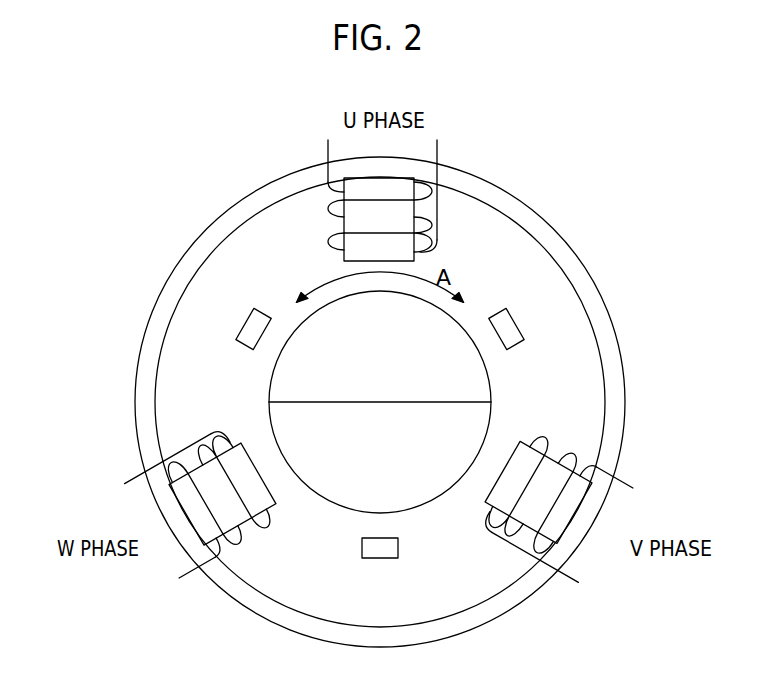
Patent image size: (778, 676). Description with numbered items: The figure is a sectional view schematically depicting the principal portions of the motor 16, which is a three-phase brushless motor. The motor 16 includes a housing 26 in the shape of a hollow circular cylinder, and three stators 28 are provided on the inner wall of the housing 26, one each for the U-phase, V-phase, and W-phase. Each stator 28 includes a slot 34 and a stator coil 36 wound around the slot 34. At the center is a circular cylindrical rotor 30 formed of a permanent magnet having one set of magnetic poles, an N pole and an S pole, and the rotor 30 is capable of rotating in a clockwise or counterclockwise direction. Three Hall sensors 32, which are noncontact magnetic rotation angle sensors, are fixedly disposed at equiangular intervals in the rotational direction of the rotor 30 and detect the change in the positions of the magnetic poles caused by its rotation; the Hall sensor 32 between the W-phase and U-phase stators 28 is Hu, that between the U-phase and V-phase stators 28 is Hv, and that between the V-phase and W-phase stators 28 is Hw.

The motor 16 is at (167, 126).
The housing 26 is at (605, 328).
The stator 28 is at (545, 111).
The rotor 30 is at (332, 488).
The Hall sensor 32 is at (378, 558).
The slot 34 is at (387, 188).
The stator coil 36 is at (437, 217).